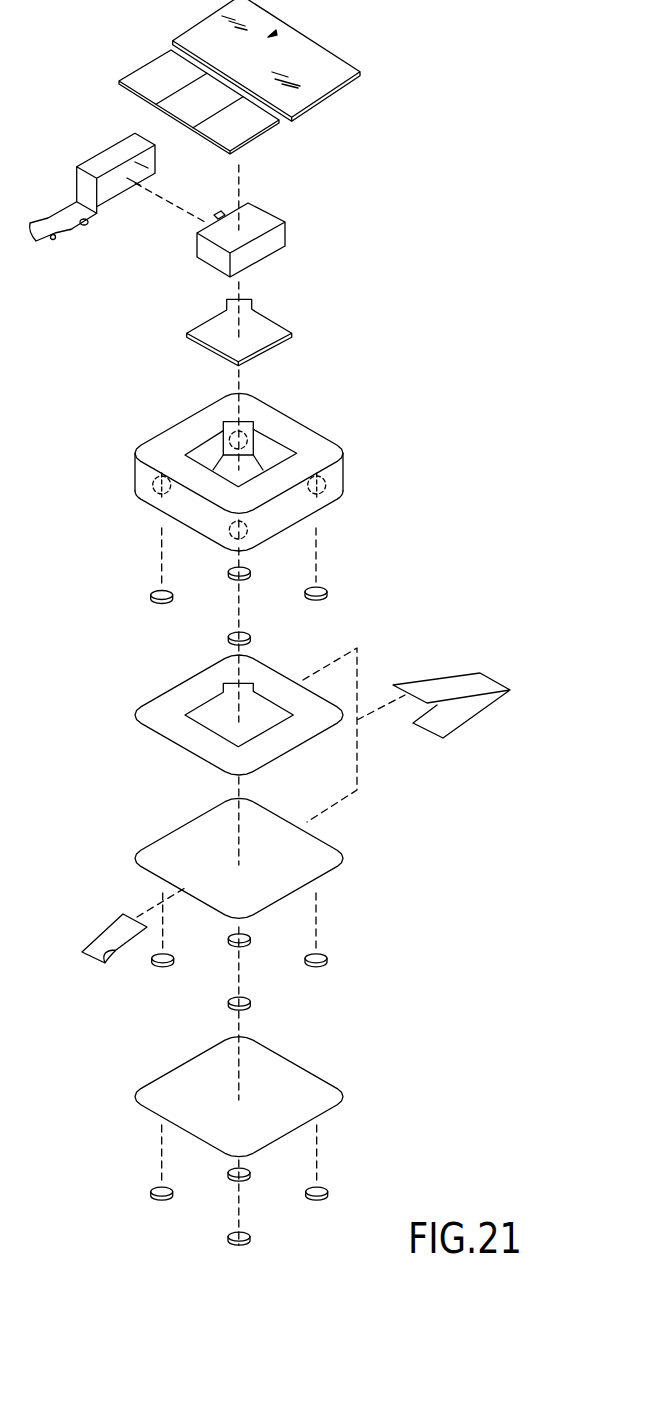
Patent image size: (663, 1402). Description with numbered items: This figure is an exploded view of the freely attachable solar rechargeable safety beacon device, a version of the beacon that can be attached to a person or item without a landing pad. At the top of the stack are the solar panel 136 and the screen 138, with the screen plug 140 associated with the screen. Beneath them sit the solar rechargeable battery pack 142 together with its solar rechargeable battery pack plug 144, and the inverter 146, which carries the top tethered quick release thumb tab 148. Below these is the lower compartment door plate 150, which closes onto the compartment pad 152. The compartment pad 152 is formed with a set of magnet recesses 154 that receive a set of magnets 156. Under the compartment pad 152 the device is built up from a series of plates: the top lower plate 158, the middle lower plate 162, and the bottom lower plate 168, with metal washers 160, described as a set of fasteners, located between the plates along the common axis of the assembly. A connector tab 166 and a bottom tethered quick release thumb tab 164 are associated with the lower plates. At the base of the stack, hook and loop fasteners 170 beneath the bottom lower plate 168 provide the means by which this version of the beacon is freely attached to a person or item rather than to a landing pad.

The solar panel 136 is at (163, 68).
The screen 138 is at (315, 58).
The screen plug 140 is at (273, 33).
The solar rechargeable battery pack 142 is at (258, 213).
The solar rechargeable battery pack plug 144 is at (220, 214).
The inverter 146 is at (118, 150).
The tethered quick release thumb tab 148 is at (55, 239).
The lower compartment door plate 150 is at (263, 323).
The compartment pad 152 is at (282, 423).
The set of magnet recesses 154 is at (157, 486).
The set of magnets 156 is at (161, 604).
The top lower plate 158 is at (165, 728).
The metal washers 160 is at (320, 967).
The middle lower plate 162 is at (173, 847).
The bottom tethered quick release thumb tab 164 is at (103, 928).
The connector tab 166 is at (477, 715).
The bottom lower plate 168 is at (173, 1083).
The hook and loop fasteners 170 is at (160, 1201).